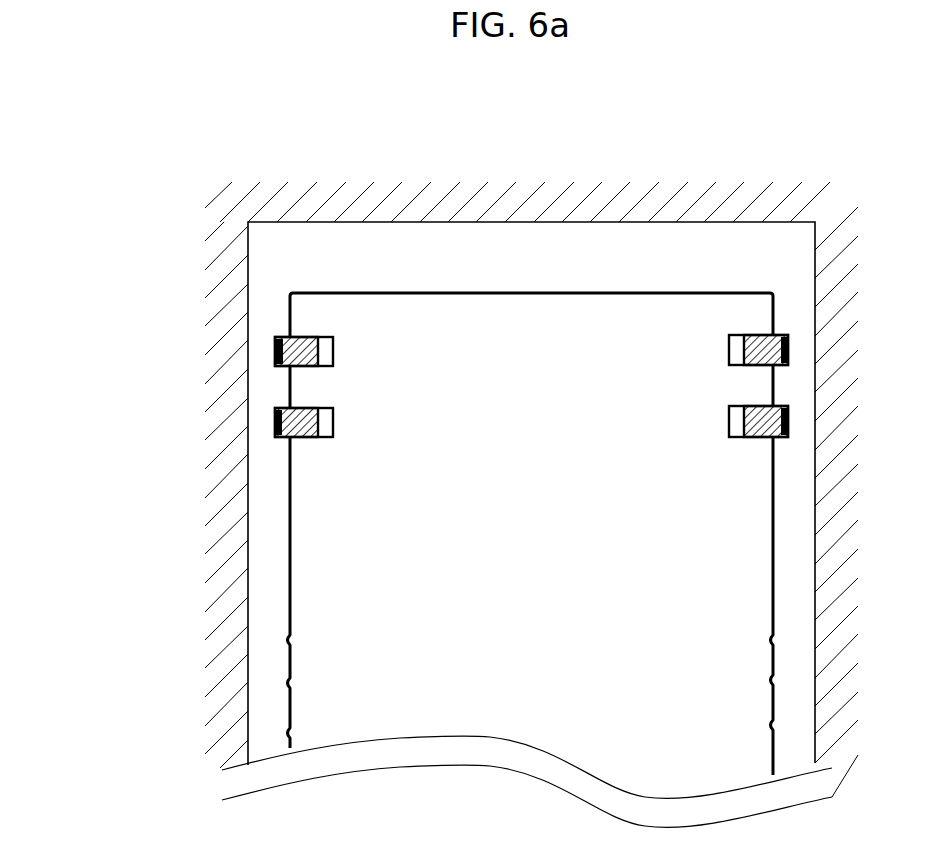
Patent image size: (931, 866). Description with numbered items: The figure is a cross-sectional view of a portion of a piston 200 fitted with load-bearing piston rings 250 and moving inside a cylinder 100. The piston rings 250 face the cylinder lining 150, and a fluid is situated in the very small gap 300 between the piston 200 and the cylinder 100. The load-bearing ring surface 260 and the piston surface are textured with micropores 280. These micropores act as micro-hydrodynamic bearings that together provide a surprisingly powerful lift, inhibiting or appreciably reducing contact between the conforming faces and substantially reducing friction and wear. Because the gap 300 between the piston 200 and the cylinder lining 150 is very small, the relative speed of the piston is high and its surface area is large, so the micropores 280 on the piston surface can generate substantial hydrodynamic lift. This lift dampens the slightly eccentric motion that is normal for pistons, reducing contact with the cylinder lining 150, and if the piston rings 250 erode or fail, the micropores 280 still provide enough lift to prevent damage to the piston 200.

The cylinder 100 is at (218, 255).
The cylinder lining 150 is at (247, 322).
The piston 200 is at (500, 295).
The load-bearing piston rings 250 is at (283, 355).
The load-bearing ring surface 260 is at (277, 423).
The piston surface micropores 280 is at (292, 642).
The gap 300 is at (263, 353).